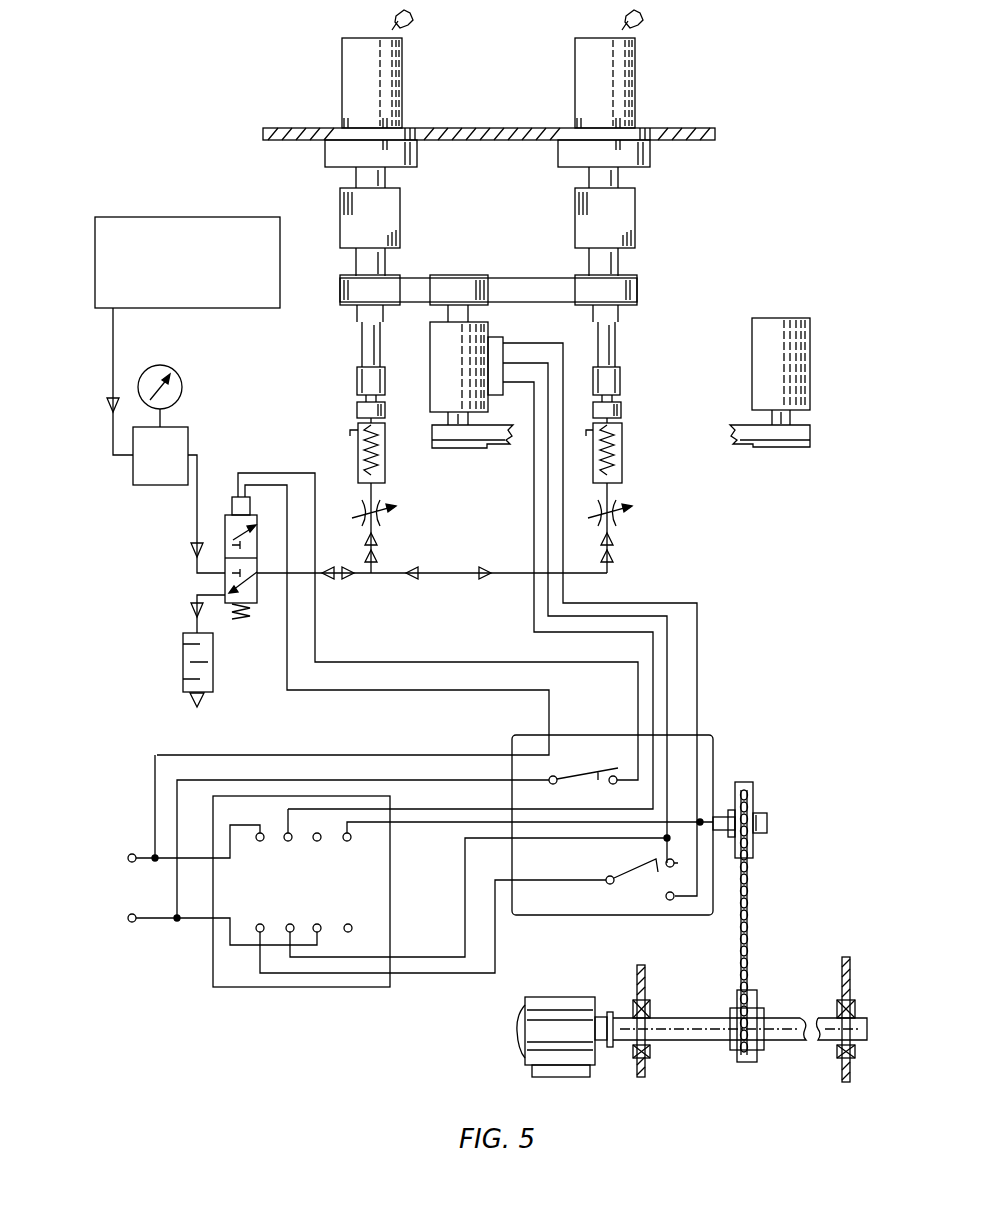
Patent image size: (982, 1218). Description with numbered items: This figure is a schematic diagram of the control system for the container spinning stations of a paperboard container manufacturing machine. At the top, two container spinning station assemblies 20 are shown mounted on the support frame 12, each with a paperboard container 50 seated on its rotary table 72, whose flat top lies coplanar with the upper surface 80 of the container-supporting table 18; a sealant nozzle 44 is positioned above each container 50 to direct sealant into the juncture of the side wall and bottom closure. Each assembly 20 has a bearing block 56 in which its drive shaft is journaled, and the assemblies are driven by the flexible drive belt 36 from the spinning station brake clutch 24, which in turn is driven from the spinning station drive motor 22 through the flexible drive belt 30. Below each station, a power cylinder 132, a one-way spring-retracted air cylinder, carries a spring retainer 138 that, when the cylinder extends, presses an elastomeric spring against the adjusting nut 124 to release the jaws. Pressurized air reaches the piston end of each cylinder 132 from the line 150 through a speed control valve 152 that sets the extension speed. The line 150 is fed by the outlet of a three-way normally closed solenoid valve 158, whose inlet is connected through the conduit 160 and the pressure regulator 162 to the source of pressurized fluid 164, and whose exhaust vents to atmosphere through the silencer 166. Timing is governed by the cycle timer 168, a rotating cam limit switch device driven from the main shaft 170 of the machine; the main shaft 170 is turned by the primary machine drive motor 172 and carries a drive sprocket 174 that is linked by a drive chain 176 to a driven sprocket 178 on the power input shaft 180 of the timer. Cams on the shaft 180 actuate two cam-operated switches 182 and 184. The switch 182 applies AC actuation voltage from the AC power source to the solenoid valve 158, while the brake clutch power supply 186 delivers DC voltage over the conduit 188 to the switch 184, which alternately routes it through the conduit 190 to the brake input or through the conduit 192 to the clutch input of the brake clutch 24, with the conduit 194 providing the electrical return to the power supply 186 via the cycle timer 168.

The support frame 12 is at (645, 1067).
The container-supporting table 18 is at (695, 128).
The container spinning station assembly 20 is at (412, 186).
The spinning station drive motor 22 is at (756, 372).
The spinning station brake clutch 24 is at (437, 364).
The flexible drive belt 30 is at (500, 445).
The flexible drive belt 36 is at (412, 282).
The sealant nozzle 44 is at (413, 20).
The paperboard container 50 is at (388, 72).
The bearing block 56 is at (400, 212).
The rotary table 72 is at (325, 155).
The upper surface 80 is at (470, 128).
The adjusting nut 124 is at (357, 380).
The power cylinder 132 is at (385, 462).
The spring retainer 138 is at (357, 408).
The line 150 is at (363, 577).
The speed control valve 152 is at (395, 514).
The three-way normally closed solenoid valve 158 is at (257, 603).
The conduit 160 is at (113, 347).
The pressure regulator 162 is at (188, 432).
The source of pressurized fluid 164 is at (160, 217).
The silencer 166 is at (183, 658).
The cycle timer 168 is at (713, 735).
The main shaft 170 is at (672, 1018).
The primary machine drive motor 172 is at (523, 1000).
The drive sprocket 174 is at (758, 1008).
The drive chain 176 is at (750, 905).
The driven sprocket 178 is at (757, 808).
The power input shaft 180 is at (722, 815).
The cam-operated switch 182 is at (590, 775).
The cam-operated switch 184 is at (650, 862).
The brake clutch power supply 186 is at (232, 987).
The conduit 188 is at (497, 940).
The conduit 190 is at (625, 615).
The conduit 192 is at (697, 620).
The conduit 194 is at (534, 614).